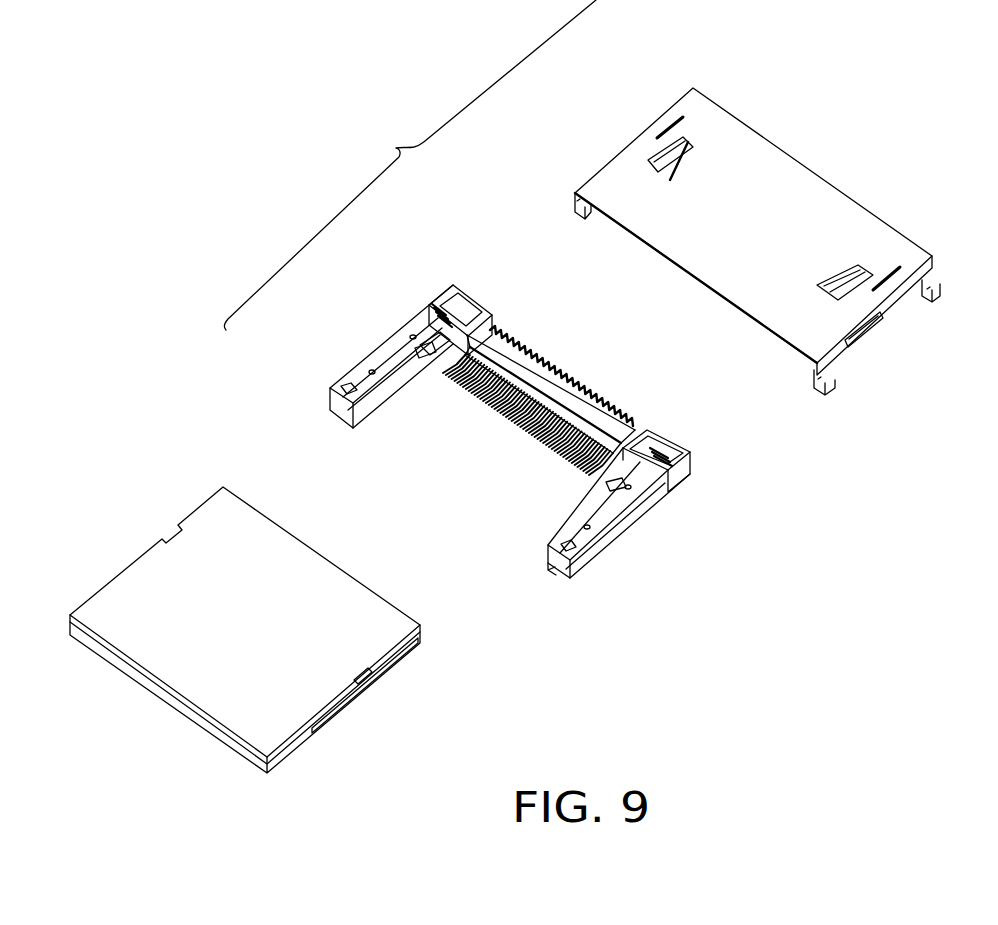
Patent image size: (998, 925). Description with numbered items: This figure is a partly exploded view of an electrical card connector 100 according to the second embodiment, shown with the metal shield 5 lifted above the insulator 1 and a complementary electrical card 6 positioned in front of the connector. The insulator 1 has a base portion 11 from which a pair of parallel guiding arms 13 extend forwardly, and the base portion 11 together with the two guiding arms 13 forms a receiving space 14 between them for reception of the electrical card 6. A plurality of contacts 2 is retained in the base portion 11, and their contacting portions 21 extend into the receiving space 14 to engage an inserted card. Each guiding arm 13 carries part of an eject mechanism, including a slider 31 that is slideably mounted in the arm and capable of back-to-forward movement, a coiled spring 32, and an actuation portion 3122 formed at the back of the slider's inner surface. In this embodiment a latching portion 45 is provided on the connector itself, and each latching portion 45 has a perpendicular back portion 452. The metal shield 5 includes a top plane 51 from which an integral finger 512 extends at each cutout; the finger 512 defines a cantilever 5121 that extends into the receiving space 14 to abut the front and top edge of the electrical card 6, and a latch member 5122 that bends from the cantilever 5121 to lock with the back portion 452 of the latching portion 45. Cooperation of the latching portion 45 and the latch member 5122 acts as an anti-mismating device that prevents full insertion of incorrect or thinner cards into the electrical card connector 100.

The electrical card connector 100 is at (410, 165).
The insulator 1 is at (519, 430).
The base portion 11 is at (550, 385).
The guiding arm 13 is at (655, 497).
The receiving space 14 is at (513, 460).
The contacts 2 is at (538, 382).
The contacting portions 21 is at (478, 388).
The slider 31 is at (597, 517).
The coiled spring 32 is at (432, 312).
The actuation portion 3122 is at (437, 343).
The latching portion 45 is at (612, 485).
The back portion 452 is at (653, 452).
The metal shield 5 is at (780, 218).
The top plane 51 is at (793, 190).
The finger 512 is at (782, 169).
The cantilever 5121 is at (650, 164).
The latch member 5122 is at (676, 115).
The electrical card 6 is at (158, 496).